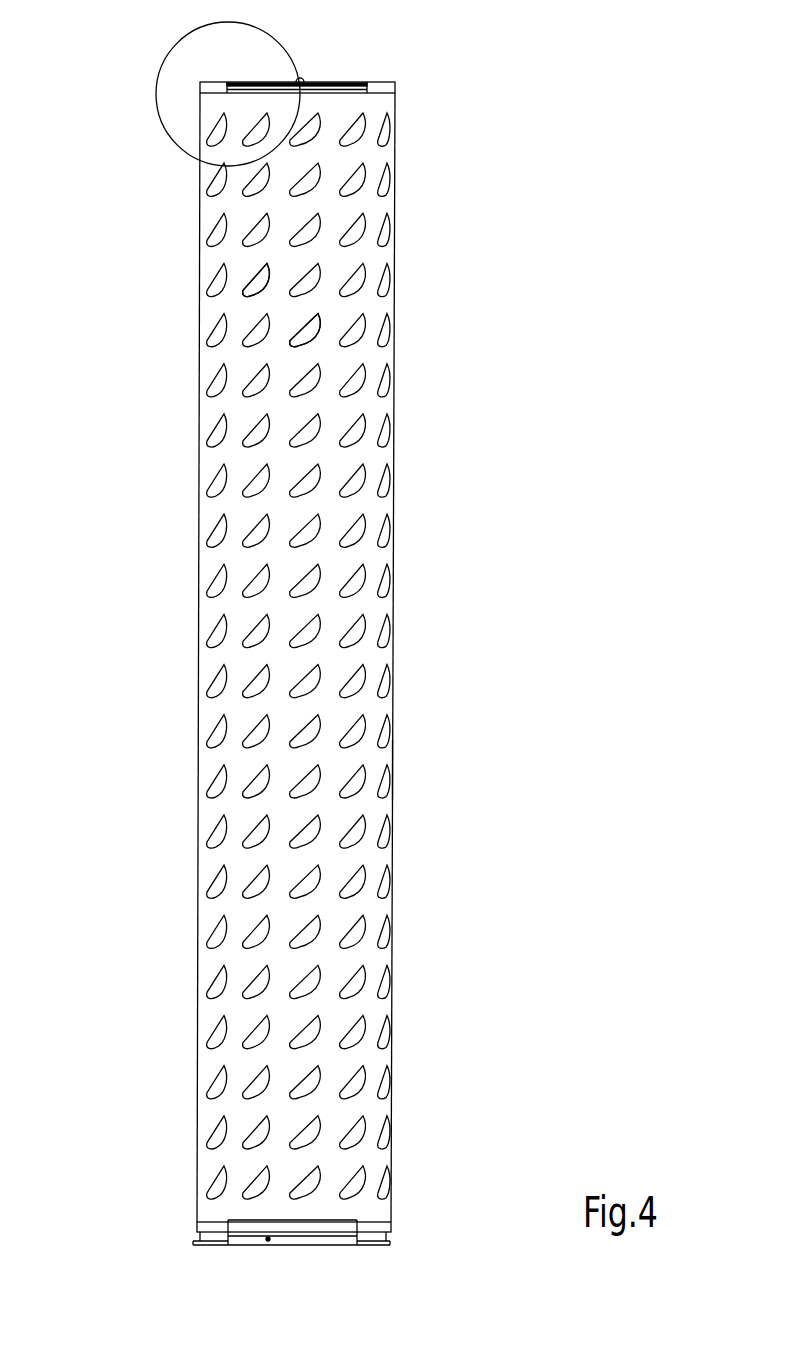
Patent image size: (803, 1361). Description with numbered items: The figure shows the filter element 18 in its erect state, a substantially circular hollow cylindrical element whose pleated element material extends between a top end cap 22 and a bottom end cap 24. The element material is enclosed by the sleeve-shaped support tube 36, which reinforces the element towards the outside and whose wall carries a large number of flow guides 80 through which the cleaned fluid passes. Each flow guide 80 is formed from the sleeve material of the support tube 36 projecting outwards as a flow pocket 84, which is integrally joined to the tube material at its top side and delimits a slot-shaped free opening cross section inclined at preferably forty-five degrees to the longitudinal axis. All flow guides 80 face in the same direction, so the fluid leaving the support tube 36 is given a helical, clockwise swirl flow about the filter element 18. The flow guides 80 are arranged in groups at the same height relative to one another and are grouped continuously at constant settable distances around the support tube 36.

The filter element 18 is at (453, 344).
The top end cap 22 is at (385, 82).
The bottom end cap 24 is at (373, 1243).
The flow guide 80 is at (393, 278).
The flow pocket 84 is at (305, 332).
The support tube 36 is at (341, 768).